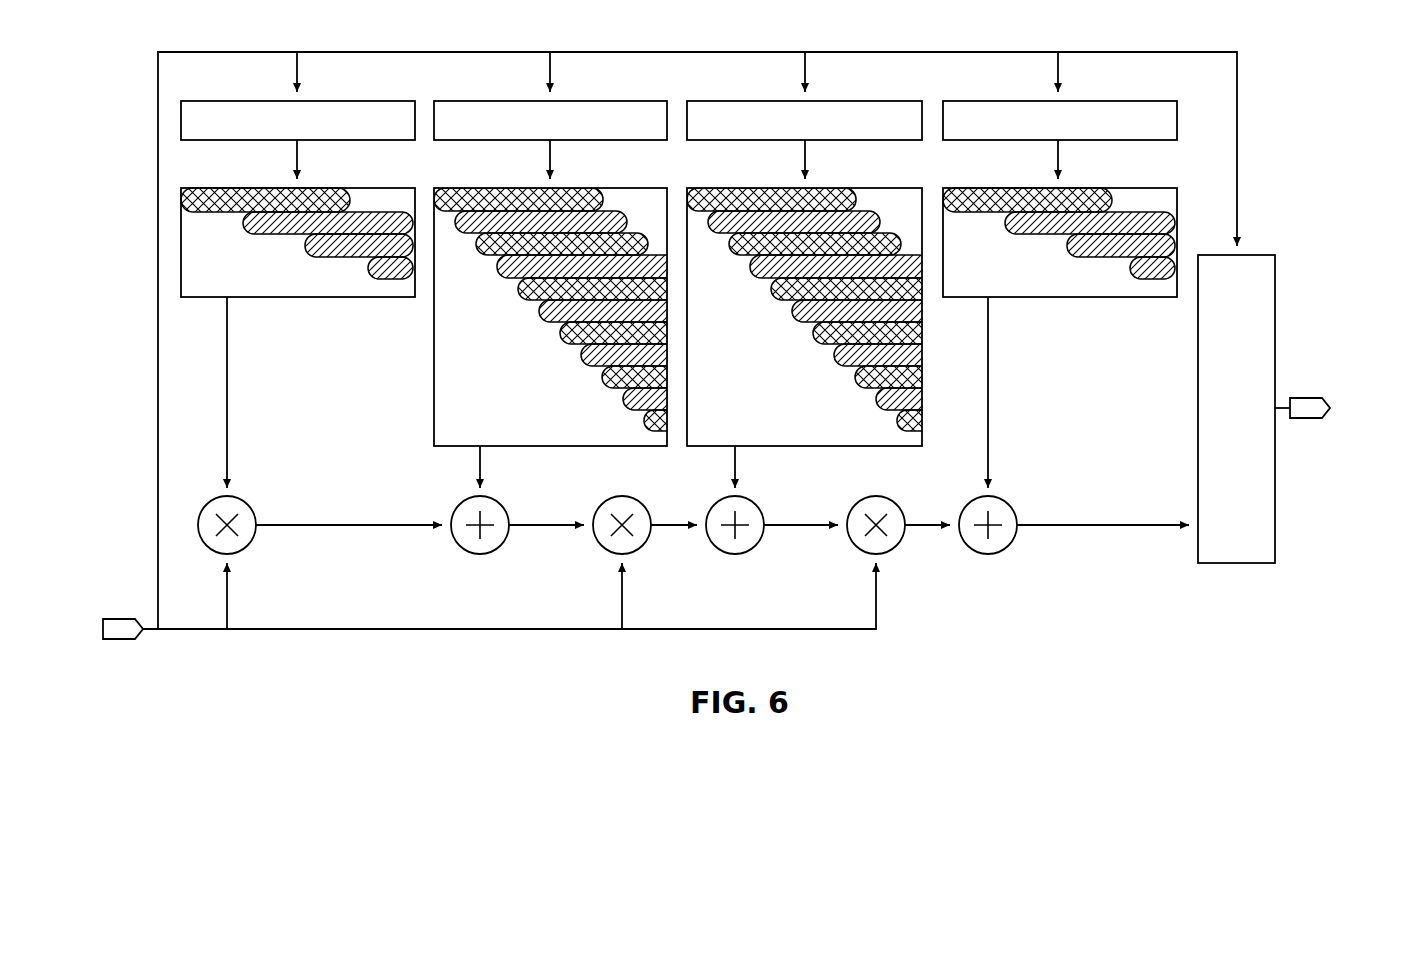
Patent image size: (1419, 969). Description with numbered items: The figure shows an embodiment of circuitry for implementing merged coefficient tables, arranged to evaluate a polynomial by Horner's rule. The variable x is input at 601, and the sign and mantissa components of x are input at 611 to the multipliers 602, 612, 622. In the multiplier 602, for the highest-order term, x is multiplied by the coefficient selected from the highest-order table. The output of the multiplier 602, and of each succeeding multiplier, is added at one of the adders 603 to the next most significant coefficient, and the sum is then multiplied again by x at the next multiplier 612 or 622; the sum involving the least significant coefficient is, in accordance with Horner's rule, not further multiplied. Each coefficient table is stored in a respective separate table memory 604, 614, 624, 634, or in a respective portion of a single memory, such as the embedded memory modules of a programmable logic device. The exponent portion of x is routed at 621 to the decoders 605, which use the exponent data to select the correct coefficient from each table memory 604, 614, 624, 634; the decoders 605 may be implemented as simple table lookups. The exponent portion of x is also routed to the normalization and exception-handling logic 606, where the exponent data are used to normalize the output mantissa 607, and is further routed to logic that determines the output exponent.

The input 601 is at (120, 640).
The multiplier 602 is at (245, 502).
The adders 603 is at (1010, 572).
The table memory 604 is at (364, 188).
The decoders 605 is at (1109, 101).
The normalization and exception-handling logic 606 is at (1257, 255).
The output mantissa 607 is at (1306, 420).
The sign and mantissa input 611 is at (185, 632).
The multiplier 612 is at (645, 545).
The table memory 614 is at (617, 188).
The exponent routing 621 is at (157, 478).
The multiplier 622 is at (896, 544).
The table memory 624 is at (870, 188).
The table memory 634 is at (1127, 188).